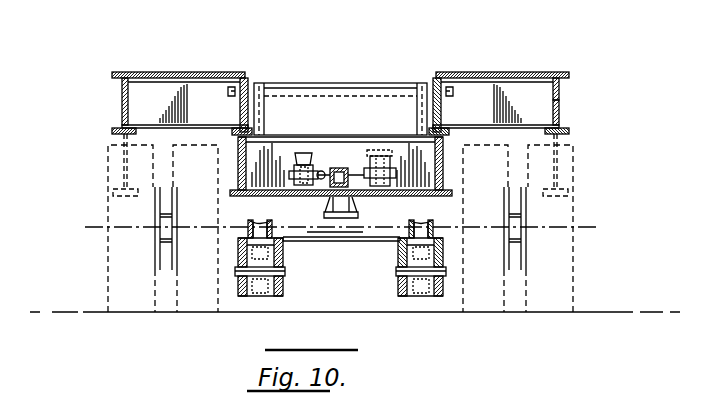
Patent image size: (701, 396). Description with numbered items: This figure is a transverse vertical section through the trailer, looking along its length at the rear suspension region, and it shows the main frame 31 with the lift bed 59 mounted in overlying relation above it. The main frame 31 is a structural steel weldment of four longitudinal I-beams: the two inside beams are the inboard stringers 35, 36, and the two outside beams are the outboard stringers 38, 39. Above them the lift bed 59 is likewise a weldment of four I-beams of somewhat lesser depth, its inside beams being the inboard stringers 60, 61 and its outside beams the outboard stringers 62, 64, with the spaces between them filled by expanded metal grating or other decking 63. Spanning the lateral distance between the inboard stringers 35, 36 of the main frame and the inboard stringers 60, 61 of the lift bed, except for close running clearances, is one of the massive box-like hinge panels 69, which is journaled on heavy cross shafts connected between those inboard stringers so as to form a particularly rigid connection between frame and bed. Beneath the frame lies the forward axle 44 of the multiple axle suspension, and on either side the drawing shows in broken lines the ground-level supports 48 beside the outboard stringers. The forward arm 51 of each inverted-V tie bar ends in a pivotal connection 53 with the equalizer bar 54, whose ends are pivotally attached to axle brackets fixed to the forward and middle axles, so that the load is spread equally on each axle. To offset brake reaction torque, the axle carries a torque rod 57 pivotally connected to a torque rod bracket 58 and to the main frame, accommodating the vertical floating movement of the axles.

The main frame 31 is at (238, 160).
The inboard stringer 35 is at (238, 187).
The inboard stringer 36 is at (450, 152).
The outboard stringer 38 is at (108, 176).
The outboard stringer 39 is at (573, 163).
The axle 44 is at (333, 241).
The pier 48 is at (108, 288).
The forward arm 51 is at (245, 226).
The pivotal connection 53 is at (364, 290).
The equalizer bar 54 is at (262, 297).
The torque rod 57 is at (330, 168).
The torque rod bracket 58 is at (340, 175).
The lift bed 59 is at (559, 87).
The inboard stringer 60 is at (237, 112).
The inboard stringer 61 is at (445, 104).
The outboard stringer 62 is at (122, 98).
The decking 63 is at (182, 72).
The outboard stringer 64 is at (560, 113).
The hinge panel 69 is at (310, 83).